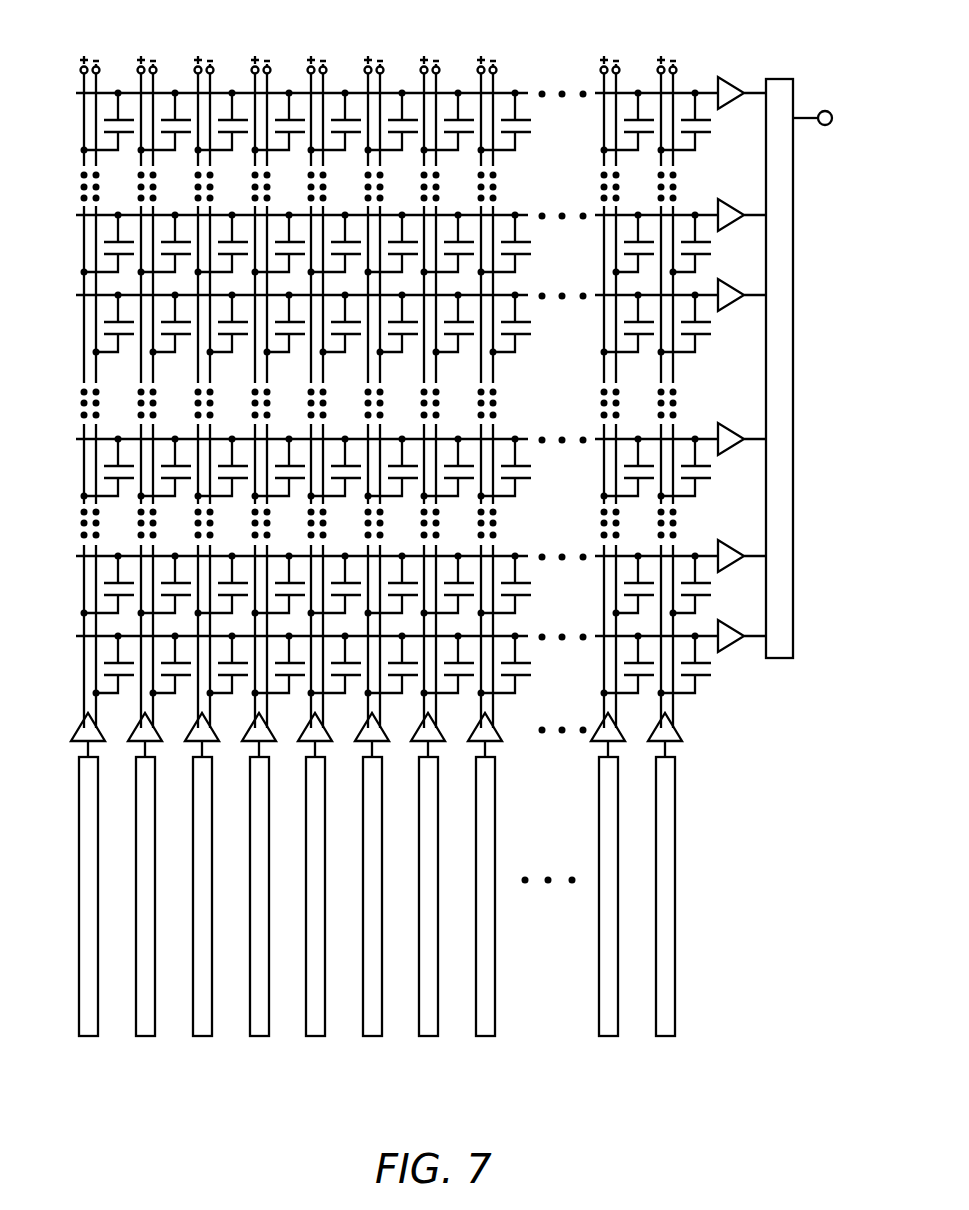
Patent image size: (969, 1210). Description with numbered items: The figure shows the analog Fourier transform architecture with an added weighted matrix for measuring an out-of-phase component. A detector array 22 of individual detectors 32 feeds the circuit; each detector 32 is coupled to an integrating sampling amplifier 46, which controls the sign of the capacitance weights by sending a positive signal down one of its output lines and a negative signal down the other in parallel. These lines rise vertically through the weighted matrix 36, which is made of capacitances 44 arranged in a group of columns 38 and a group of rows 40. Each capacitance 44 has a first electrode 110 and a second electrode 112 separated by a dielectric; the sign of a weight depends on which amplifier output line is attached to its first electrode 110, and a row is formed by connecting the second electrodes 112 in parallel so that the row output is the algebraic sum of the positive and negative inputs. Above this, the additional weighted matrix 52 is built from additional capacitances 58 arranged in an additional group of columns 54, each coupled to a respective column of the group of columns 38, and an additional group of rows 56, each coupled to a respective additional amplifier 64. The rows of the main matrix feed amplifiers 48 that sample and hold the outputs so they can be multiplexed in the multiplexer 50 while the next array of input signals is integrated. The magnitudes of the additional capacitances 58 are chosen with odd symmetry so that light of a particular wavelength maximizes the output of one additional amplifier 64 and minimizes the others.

The detector array 22 is at (143, 1070).
The detector 32 is at (77, 905).
The weighted matrix 36 is at (70, 467).
The group of columns 38 is at (57, 621).
The group of rows 40 is at (70, 435).
The capacitance 44 is at (121, 479).
The integrating sampling amplifier 46 is at (75, 735).
The amplifier 48 is at (723, 424).
The multiplexer 50 is at (788, 76).
The additional weighted matrix 52 is at (157, 47).
The additional group of columns 54 is at (58, 148).
The additional group of rows 56 is at (305, 43).
The additional capacitance 58 is at (121, 137).
The additional amplifier 64 is at (745, 72).
The first electrode 110 is at (82, 702).
The second electrode 112 is at (110, 643).